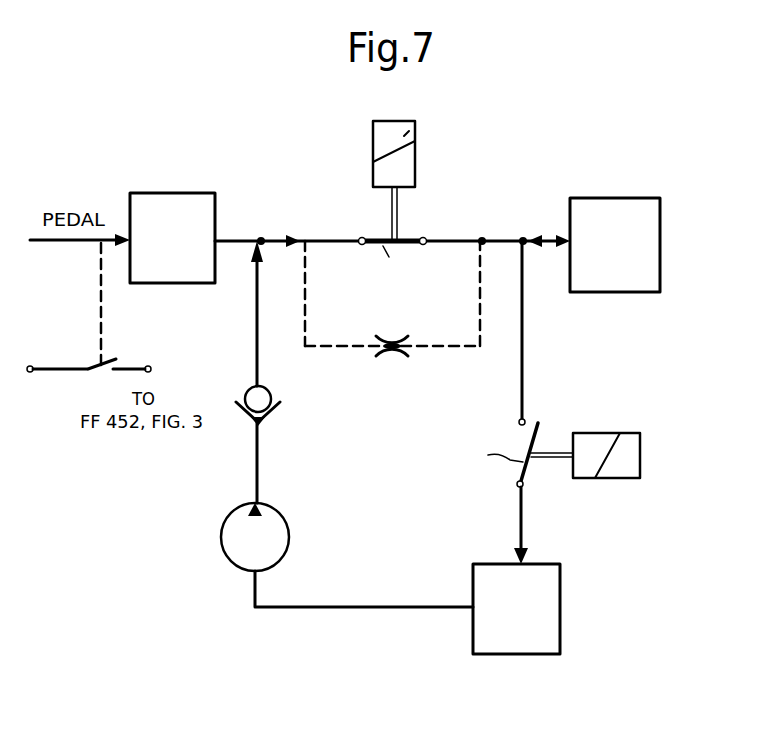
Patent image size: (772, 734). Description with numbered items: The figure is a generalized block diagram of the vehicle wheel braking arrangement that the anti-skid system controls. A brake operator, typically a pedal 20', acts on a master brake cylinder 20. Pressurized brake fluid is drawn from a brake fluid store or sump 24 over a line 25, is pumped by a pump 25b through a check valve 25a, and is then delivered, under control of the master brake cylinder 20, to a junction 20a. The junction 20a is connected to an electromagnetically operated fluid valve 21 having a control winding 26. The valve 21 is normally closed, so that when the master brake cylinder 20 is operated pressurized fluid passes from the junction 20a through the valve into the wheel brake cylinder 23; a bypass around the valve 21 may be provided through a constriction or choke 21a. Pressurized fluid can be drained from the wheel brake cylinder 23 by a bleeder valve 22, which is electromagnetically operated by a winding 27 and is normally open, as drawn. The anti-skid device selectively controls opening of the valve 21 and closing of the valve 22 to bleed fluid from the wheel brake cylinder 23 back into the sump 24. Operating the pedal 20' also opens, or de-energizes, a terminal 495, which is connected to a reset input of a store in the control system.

The master brake cylinder 20 is at (190, 214).
The pedal 20' is at (76, 304).
The junction 20a is at (305, 240).
The electromagnetically operated fluid valve 21 is at (410, 240).
The constriction or choke 21a is at (393, 356).
The bleeder valve 22 is at (539, 428).
The wheel brake cylinder 23 is at (647, 222).
The brake fluid store or sump 24 is at (537, 641).
The line 25 is at (365, 609).
The check valve 25a is at (249, 392).
The pump 25b is at (237, 525).
The control winding 26 is at (416, 133).
The winding 27 is at (600, 440).
The terminal 495 is at (148, 365).